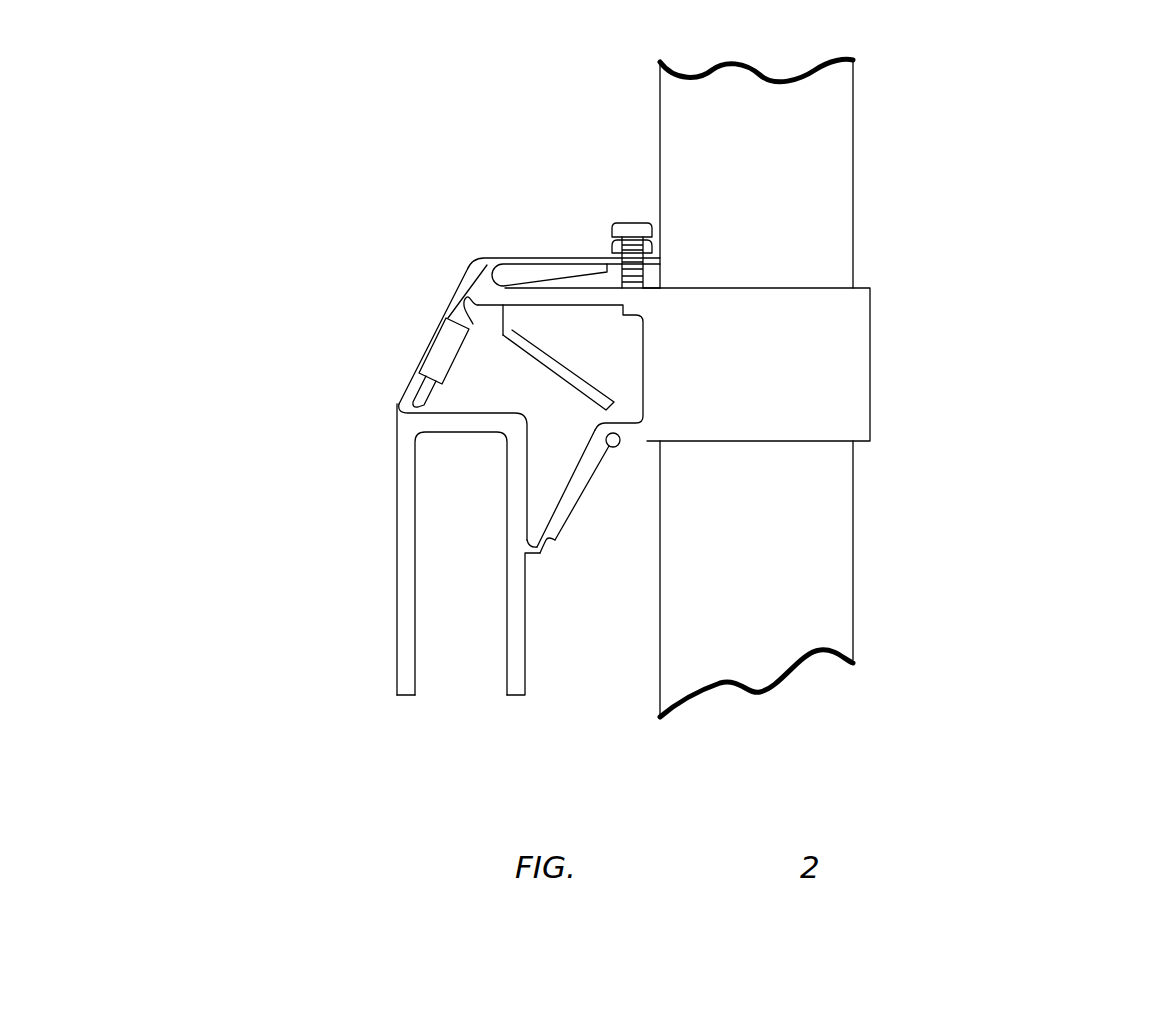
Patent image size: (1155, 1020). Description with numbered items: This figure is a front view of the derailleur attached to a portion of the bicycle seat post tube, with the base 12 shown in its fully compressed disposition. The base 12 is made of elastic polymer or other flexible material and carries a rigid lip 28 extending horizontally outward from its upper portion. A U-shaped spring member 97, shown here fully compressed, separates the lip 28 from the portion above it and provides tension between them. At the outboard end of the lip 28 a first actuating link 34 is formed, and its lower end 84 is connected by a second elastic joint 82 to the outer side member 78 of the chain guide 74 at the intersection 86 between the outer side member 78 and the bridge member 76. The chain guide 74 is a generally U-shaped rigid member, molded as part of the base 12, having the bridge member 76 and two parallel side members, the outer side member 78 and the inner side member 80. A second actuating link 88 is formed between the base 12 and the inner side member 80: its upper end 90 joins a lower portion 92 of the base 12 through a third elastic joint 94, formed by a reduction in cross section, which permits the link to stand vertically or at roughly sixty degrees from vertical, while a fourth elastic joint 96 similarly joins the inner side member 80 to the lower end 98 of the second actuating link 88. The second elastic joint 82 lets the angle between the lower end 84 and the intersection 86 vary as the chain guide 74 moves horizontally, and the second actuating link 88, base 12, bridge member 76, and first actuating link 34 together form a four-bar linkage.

The base 12 is at (870, 365).
The rigid lip 28 is at (540, 298).
The U-shaped spring member 97 is at (502, 278).
The first actuating link 34 is at (408, 382).
The lower end of first actuating link 84 is at (408, 386).
The second elastic joint 82 is at (395, 403).
The intersection 86 is at (395, 433).
The bridge member 76 is at (460, 420).
The outer side member 78 is at (397, 675).
The inner side member 80 is at (507, 663).
The chain guide 74 is at (533, 620).
The lower portion of base 92 is at (647, 432).
The upper end of second actuating link 90 is at (607, 458).
The second actuating link 88 is at (578, 485).
The lower end of second actuating link 98 is at (565, 530).
The third elastic joint 94 is at (621, 444).
The fourth elastic joint 96 is at (545, 553).